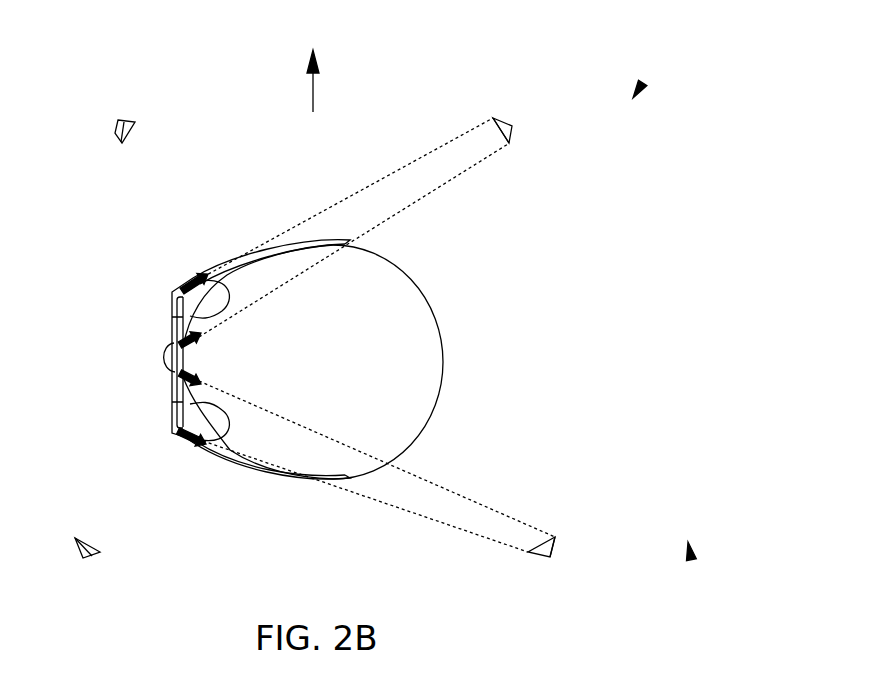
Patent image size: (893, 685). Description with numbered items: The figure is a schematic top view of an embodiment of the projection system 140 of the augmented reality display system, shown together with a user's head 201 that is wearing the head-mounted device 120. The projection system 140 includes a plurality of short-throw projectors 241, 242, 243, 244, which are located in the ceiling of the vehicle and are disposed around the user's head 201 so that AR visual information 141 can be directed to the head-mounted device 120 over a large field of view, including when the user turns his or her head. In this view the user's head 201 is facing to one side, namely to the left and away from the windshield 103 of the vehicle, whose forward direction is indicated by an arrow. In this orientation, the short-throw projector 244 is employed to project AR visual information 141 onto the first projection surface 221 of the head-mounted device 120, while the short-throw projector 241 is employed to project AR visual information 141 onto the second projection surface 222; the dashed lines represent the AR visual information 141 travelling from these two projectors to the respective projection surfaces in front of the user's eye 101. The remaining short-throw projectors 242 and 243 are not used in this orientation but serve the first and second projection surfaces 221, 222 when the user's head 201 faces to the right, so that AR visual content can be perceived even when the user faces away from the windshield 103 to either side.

The eye 101 is at (692, 562).
The windshield 103 is at (315, 97).
The head-mounted device 120 is at (286, 247).
The projection system 140 is at (641, 85).
The AR visual information 141 is at (412, 203).
The user's head 201 is at (335, 374).
The first projection surface 221 is at (218, 272).
The second projection surface 222 is at (217, 420).
The short-throw projector 241 is at (550, 558).
The short-throw projector 242 is at (92, 560).
The short-throw projector 243 is at (122, 143).
The short-throw projector 244 is at (510, 142).